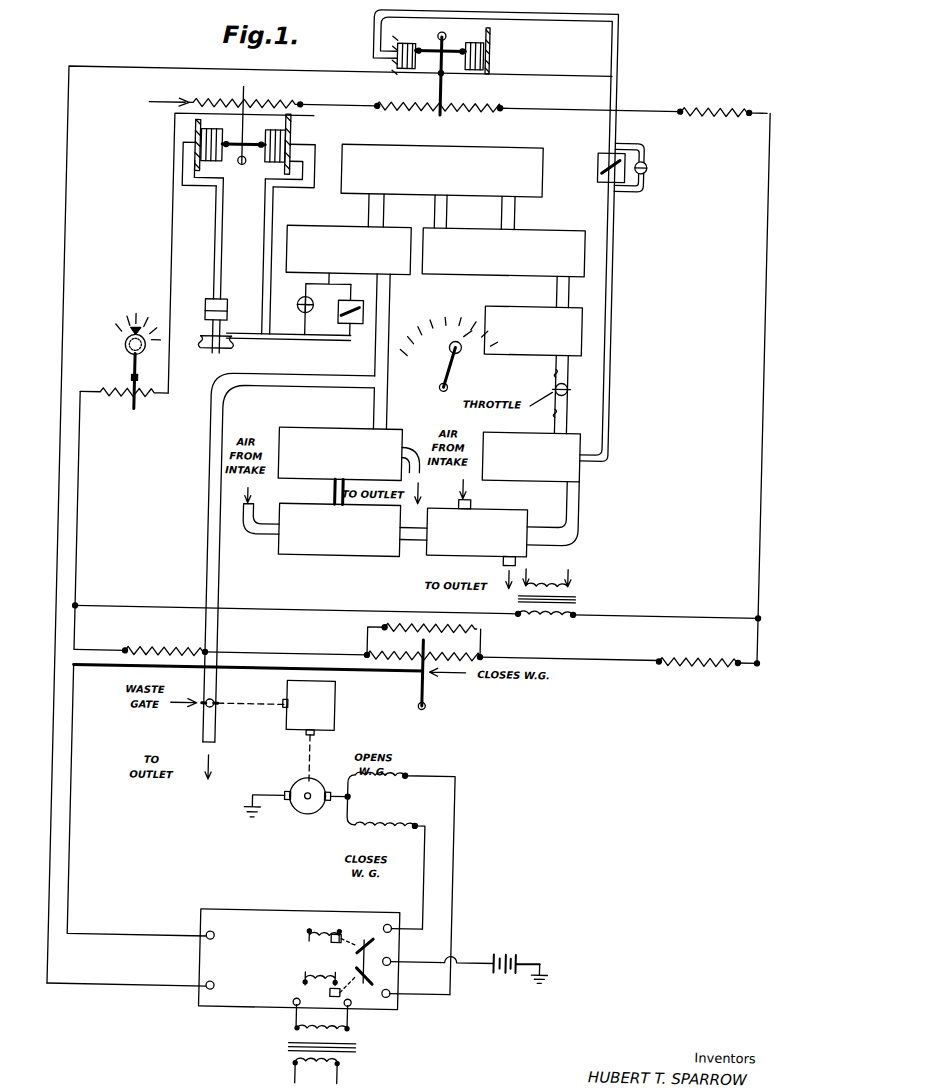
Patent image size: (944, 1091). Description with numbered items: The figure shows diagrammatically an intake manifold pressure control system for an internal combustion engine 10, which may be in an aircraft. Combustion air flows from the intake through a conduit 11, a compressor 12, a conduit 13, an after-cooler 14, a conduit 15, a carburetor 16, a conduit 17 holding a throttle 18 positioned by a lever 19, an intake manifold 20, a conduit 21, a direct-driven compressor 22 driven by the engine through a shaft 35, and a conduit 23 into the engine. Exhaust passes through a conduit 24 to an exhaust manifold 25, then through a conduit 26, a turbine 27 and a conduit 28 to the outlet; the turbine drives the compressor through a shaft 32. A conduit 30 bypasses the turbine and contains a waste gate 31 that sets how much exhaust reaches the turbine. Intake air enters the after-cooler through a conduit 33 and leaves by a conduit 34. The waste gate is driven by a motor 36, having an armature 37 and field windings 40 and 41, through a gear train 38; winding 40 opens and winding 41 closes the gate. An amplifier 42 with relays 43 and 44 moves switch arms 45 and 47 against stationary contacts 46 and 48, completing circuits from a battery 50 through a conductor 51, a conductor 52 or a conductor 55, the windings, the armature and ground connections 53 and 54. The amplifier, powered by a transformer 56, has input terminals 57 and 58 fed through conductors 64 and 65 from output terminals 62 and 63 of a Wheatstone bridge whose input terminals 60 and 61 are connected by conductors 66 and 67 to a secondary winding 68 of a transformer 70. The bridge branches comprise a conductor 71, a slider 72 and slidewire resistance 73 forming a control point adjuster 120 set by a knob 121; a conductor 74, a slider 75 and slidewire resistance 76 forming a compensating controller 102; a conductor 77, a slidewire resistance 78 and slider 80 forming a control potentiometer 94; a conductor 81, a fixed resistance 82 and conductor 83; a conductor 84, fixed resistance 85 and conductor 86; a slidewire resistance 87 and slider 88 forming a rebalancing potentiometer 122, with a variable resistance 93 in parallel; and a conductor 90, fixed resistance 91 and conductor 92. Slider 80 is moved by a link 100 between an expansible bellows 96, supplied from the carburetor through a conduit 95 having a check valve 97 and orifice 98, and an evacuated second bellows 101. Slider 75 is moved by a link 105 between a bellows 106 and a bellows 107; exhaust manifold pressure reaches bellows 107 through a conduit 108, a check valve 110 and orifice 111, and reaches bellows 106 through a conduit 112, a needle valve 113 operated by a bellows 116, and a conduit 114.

The internal combustion engine 10 is at (522, 142).
The conduit 11 is at (266, 530).
The compressor 12 is at (350, 550).
The conduit 13 is at (423, 535).
The after-cooler 14 is at (522, 506).
The conduit 15 is at (580, 500).
The carburetor 16 is at (592, 468).
The conduit 17 is at (577, 368).
The throttle 18 is at (547, 367).
The lever 19 is at (447, 360).
The intake manifold 20 is at (496, 298).
The conduit 21 is at (562, 282).
The direct-driven compressor 22 is at (572, 221).
The conduit 23 is at (518, 202).
The conduit 24 is at (372, 205).
The exhaust manifold 25 is at (408, 270).
The conduit 26 is at (397, 398).
The turbine 27 is at (411, 424).
The conduit 28 is at (438, 466).
The conduit 30 is at (272, 383).
The waste gate 31 is at (246, 694).
The shaft 32 is at (343, 486).
The conduit 33 is at (482, 494).
The conduit 34 is at (528, 552).
The shaft 35 is at (450, 203).
The motor 36 is at (305, 819).
The armature 37 is at (335, 810).
The gear train 38 is at (302, 726).
The field winding 40 is at (396, 782).
The field winding 41 is at (400, 818).
The amplifier 42 is at (274, 906).
The relay 43 is at (312, 925).
The relay 44 is at (312, 984).
The switch arm 45 is at (412, 926).
The stationary contact 46 is at (374, 928).
The switch arm 47 is at (412, 959).
The stationary contact 48 is at (396, 992).
The battery 50 is at (518, 966).
The conductor 51 is at (492, 953).
The conductor 52 is at (442, 879).
The ground connection 53 is at (270, 792).
The ground connection 54 is at (566, 968).
The conductor 55 is at (470, 988).
The transformer 56 is at (307, 1037).
The signal input terminal 57 is at (227, 929).
The signal input terminal 58 is at (226, 984).
The input terminal 60 is at (90, 603).
The input terminal 61 is at (768, 603).
The output terminal 62 is at (438, 680).
The output terminal 63 is at (443, 70).
The conductor 64 is at (89, 806).
The conductor 65 is at (69, 784).
The conductor 66 is at (250, 606).
The conductor 67 is at (666, 606).
The secondary winding 68 is at (575, 607).
The transformer 70 is at (598, 590).
The conductor 71 is at (89, 487).
The slider 72 is at (140, 357).
The slidewire resistance 73 is at (162, 392).
The conductor 74 is at (175, 215).
The slider 75 is at (246, 98).
The slidewire resistance 76 is at (220, 98).
The conductor 77 is at (345, 99).
The slidewire resistance 78 is at (420, 105).
The slider 80 is at (438, 86).
The conductor 81 is at (770, 295).
The fixed resistance 82 is at (718, 101).
The conductor 83 is at (658, 99).
The conductor 84 is at (90, 621).
The fixed resistance 85 is at (176, 647).
The conductor 86 is at (290, 648).
The slidewire resistance 87 is at (414, 646).
The slider 88 is at (434, 684).
The conductor 90 is at (772, 626).
The fixed resistance 91 is at (712, 655).
The conductor 92 is at (614, 651).
The variable resistance 93 is at (396, 620).
The control potentiometer 94 is at (494, 89).
The conduit 95 is at (619, 311).
The expansible bellows 96 is at (408, 40).
The check valve 97 is at (600, 158).
The orifice 98 is at (650, 157).
The link 100 is at (452, 38).
The second bellows 101 is at (489, 40).
The compensating controller 102 is at (159, 93).
The link 105 is at (250, 150).
The bellows 106 is at (196, 130).
The bellows 107 is at (282, 132).
The conduit 108 is at (268, 212).
The check valve 110 is at (362, 320).
The orifice 111 is at (303, 300).
The conduit 112 is at (255, 336).
The needle valve 113 is at (228, 302).
The conduit 114 is at (218, 233).
The bellows 116 is at (207, 342).
The control point adjuster 120 is at (130, 405).
The knob 121 is at (132, 345).
The rebalancing potentiometer 122 is at (478, 684).